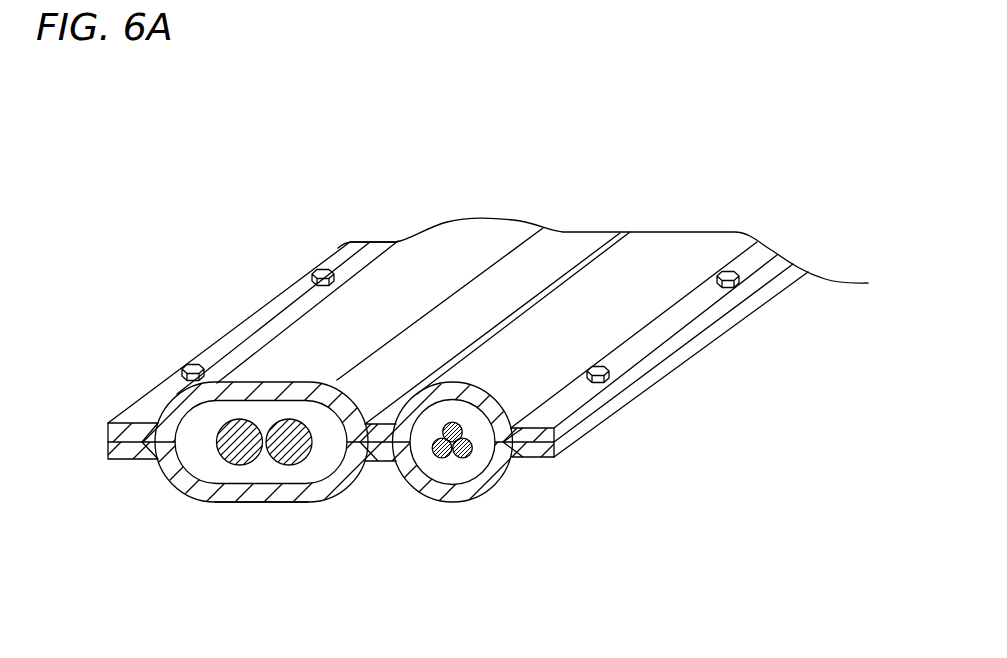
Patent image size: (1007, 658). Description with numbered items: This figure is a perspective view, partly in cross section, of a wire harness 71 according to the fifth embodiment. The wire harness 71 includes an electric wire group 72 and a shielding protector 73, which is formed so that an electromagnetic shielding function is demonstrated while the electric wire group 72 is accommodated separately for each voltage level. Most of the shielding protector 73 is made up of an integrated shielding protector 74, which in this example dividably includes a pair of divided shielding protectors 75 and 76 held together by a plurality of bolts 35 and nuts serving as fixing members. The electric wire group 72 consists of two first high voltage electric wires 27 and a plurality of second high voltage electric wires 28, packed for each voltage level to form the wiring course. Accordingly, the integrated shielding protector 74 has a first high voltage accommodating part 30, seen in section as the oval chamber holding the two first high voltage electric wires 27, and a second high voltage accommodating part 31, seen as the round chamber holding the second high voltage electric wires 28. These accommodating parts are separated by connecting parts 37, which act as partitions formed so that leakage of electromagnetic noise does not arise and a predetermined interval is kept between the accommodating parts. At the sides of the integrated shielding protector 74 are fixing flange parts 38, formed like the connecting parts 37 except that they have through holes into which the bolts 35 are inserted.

The first high voltage electric wires 27 is at (168, 553).
The second high voltage electric wires 28 is at (340, 367).
The first high voltage accommodating part 30 is at (192, 455).
The second high voltage accommodating part 31 is at (426, 465).
The bolts 35 is at (329, 269).
The connecting parts 37 is at (393, 413).
The fixing flange parts 38 is at (140, 416).
The wire harness 71 is at (732, 173).
The electric wire group 72 is at (307, 335).
The shielding protector 73 is at (650, 234).
The integrated shielding protector 74 is at (582, 305).
The divided shielding protector 75 is at (285, 341).
The divided shielding protector 76 is at (305, 504).